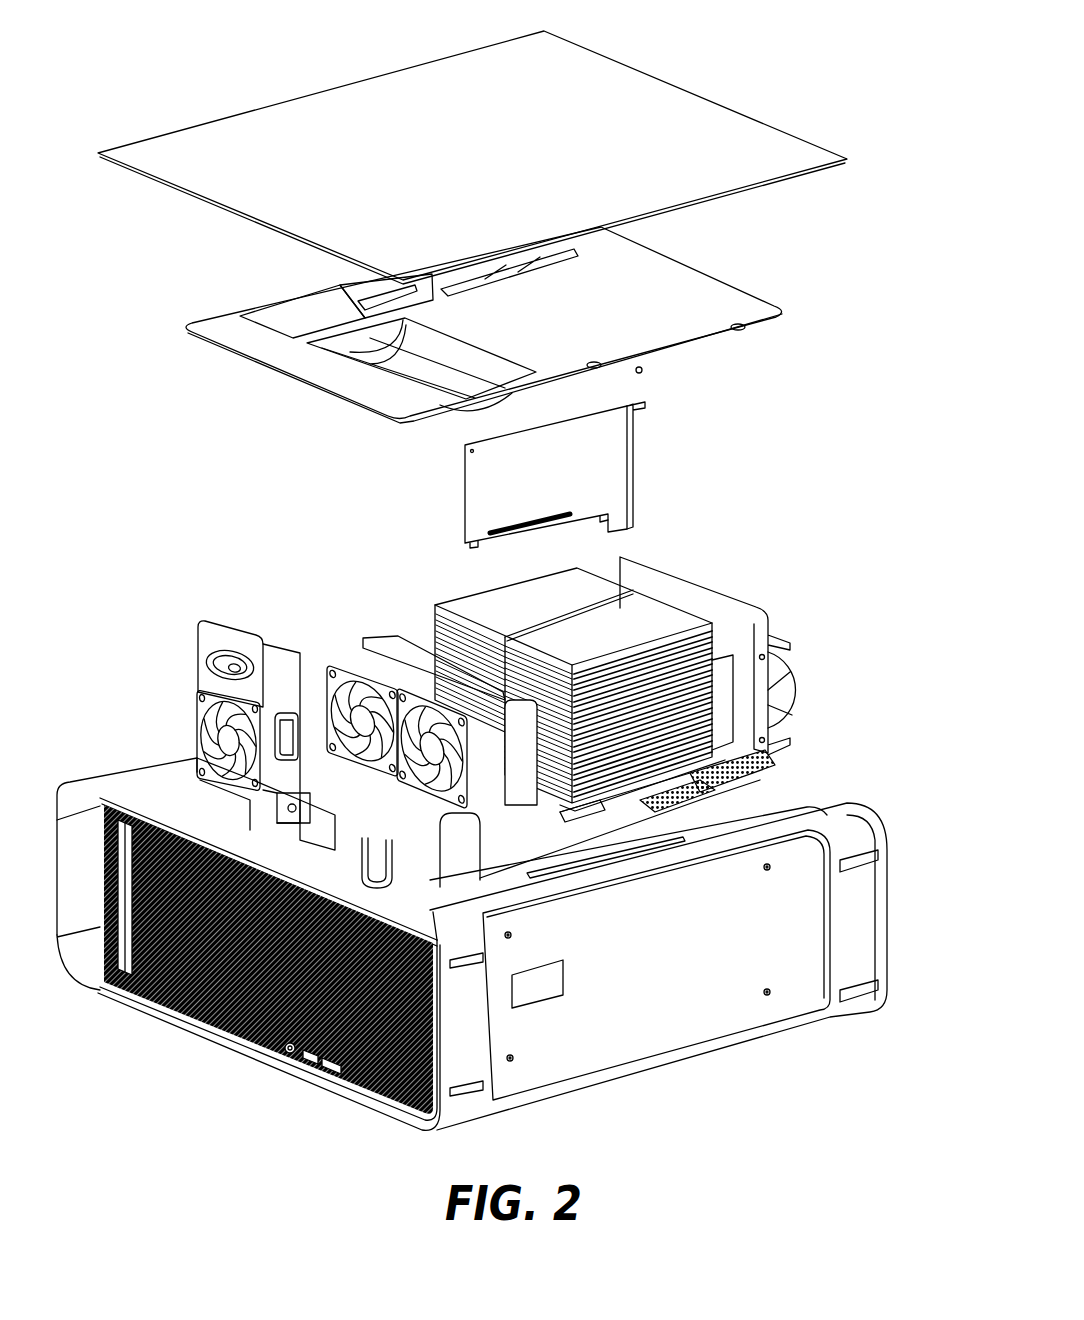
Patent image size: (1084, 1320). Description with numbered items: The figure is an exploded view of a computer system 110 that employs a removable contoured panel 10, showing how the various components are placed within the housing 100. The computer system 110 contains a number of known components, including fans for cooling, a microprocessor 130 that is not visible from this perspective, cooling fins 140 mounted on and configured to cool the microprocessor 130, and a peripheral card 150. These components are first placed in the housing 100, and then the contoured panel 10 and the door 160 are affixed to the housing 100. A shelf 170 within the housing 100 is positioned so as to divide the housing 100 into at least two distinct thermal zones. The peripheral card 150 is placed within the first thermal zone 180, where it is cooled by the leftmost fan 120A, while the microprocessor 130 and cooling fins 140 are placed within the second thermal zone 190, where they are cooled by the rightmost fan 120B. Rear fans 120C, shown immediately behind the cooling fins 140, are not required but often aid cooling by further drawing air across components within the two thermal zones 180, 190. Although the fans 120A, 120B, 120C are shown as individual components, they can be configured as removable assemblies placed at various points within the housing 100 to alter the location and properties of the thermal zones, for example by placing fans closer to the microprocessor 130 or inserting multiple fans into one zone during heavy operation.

The door 160 is at (637, 67).
The computer system 110 is at (892, 128).
The contoured panel 10 is at (740, 290).
The peripheral card 150 is at (633, 460).
The cooling fins 140 is at (713, 637).
The leftmost fan 120A is at (205, 623).
The rightmost fan 120B is at (352, 661).
The rear fans 120C is at (762, 610).
The housing 100 is at (885, 907).
The microprocessor 130 is at (573, 817).
The shelf 170 is at (163, 1010).
The first thermal zone 180 is at (123, 1000).
The second thermal zone 190 is at (303, 1060).